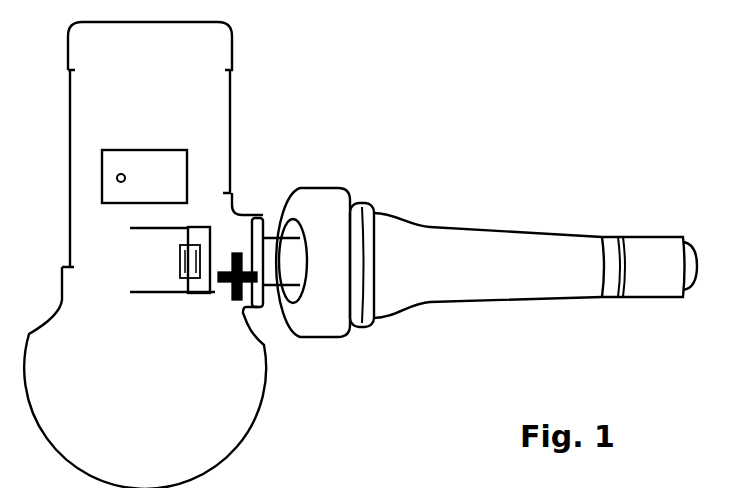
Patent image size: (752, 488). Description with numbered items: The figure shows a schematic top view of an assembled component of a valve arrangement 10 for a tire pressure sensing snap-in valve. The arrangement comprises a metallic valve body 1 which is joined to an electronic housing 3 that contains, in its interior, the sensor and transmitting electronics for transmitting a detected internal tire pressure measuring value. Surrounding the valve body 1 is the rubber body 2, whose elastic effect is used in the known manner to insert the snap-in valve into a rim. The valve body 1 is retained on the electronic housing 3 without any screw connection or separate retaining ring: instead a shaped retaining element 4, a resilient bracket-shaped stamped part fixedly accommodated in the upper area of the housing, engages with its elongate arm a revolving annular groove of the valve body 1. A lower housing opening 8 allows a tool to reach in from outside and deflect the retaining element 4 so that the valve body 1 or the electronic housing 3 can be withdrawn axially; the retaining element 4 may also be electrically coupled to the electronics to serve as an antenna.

The valve body 1 is at (661, 231).
The rubber body 2 is at (432, 224).
The electronic housing 3 is at (221, 61).
The retaining element 4 is at (240, 262).
The lower housing opening 8 is at (268, 312).
The valve arrangement 10 is at (520, 79).